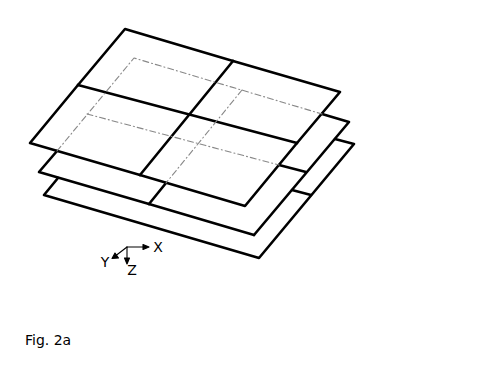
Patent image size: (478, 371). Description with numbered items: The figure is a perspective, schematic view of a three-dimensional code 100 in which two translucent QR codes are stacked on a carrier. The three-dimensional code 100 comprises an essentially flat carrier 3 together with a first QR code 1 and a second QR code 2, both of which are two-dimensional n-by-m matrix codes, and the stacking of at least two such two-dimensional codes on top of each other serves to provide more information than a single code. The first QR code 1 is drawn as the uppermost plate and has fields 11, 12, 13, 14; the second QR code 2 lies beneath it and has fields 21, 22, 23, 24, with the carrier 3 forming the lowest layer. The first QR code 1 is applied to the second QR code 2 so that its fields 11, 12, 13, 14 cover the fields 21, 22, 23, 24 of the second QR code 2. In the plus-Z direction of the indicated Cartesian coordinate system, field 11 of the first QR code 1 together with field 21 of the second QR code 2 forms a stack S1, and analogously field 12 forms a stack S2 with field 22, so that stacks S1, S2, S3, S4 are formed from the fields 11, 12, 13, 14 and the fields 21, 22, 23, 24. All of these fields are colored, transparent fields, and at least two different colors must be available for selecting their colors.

The 3D-Code 100 is at (343, 258).
The first QR code 1 is at (195, 107).
The second QR code 2 is at (220, 148).
The carrier 3 is at (212, 212).
The field of the first QR code 11 is at (155, 57).
The field of the first QR code 12 is at (273, 102).
The field of the first QR code 13 is at (85, 130).
The field of the first QR code 14 is at (218, 174).
The field of the second QR code 21 is at (186, 99).
The field of the second QR code 22 is at (252, 118).
The field of the second QR code 23 is at (94, 177).
The field of the second QR code 24 is at (201, 212).
The stack S1 is at (78, 85).
The stack S2 is at (320, 118).
The stack S3 is at (38, 147).
The stack S4 is at (273, 167).